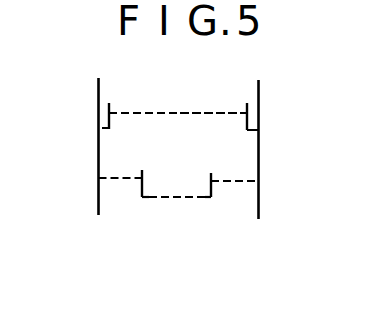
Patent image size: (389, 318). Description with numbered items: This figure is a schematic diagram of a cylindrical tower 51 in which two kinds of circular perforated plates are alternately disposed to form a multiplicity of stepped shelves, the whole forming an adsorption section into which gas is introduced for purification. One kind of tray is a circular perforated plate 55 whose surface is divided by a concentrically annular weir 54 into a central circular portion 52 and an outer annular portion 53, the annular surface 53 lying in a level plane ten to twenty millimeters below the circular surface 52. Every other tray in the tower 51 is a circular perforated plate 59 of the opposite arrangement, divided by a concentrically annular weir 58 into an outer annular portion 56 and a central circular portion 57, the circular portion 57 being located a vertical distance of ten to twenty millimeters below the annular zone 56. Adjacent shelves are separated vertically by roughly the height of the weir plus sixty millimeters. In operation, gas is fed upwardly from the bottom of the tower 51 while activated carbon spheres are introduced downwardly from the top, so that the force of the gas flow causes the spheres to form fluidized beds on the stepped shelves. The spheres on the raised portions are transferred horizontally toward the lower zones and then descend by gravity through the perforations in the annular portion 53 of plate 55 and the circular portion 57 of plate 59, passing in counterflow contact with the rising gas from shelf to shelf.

The cylindrical tower 51 is at (98, 156).
The circular portion 52 is at (182, 113).
The annular portion 53 is at (254, 128).
The concentrically annular weir 54 is at (101, 119).
The circular perforated plate 55 is at (204, 119).
The annular portion 56 is at (113, 177).
The circular portion 57 is at (173, 195).
The concentrically annular weir 58 is at (213, 192).
The circular perforated plate 59 is at (185, 203).